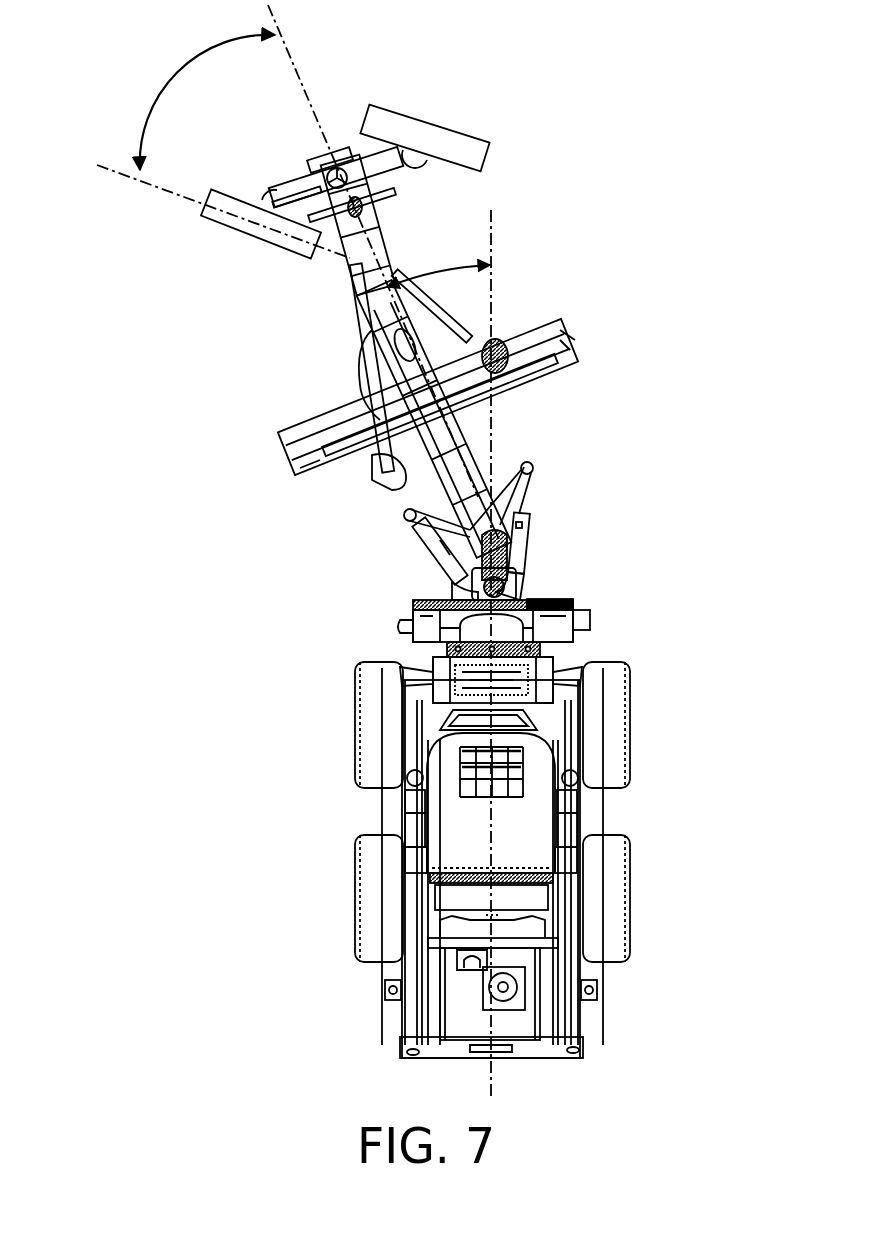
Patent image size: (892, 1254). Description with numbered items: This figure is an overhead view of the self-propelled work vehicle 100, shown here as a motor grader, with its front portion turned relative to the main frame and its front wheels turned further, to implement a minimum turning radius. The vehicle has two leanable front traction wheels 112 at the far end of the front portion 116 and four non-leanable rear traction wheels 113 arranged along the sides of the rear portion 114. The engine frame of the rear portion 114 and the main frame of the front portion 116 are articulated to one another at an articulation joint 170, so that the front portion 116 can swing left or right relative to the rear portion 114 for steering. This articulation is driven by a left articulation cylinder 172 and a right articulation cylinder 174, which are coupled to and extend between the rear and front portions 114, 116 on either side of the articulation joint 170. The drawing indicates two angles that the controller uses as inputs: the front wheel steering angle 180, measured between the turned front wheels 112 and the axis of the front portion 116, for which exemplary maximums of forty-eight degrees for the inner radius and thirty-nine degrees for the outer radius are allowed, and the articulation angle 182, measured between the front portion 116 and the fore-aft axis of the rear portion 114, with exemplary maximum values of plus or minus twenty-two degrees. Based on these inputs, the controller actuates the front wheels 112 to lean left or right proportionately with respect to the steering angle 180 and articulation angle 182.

The self-propelled work vehicle 100 is at (703, 225).
The front traction wheels 112 is at (262, 242).
The rear traction wheels 113 is at (355, 732).
The rear portion 114 is at (412, 622).
The front portion 116 is at (357, 147).
The articulation joint 170 is at (520, 556).
The left articulation cylinder 172 is at (437, 560).
The right articulation cylinder 174 is at (530, 525).
The front wheel steering angle 180 is at (197, 83).
The articulation angle 182 is at (437, 266).